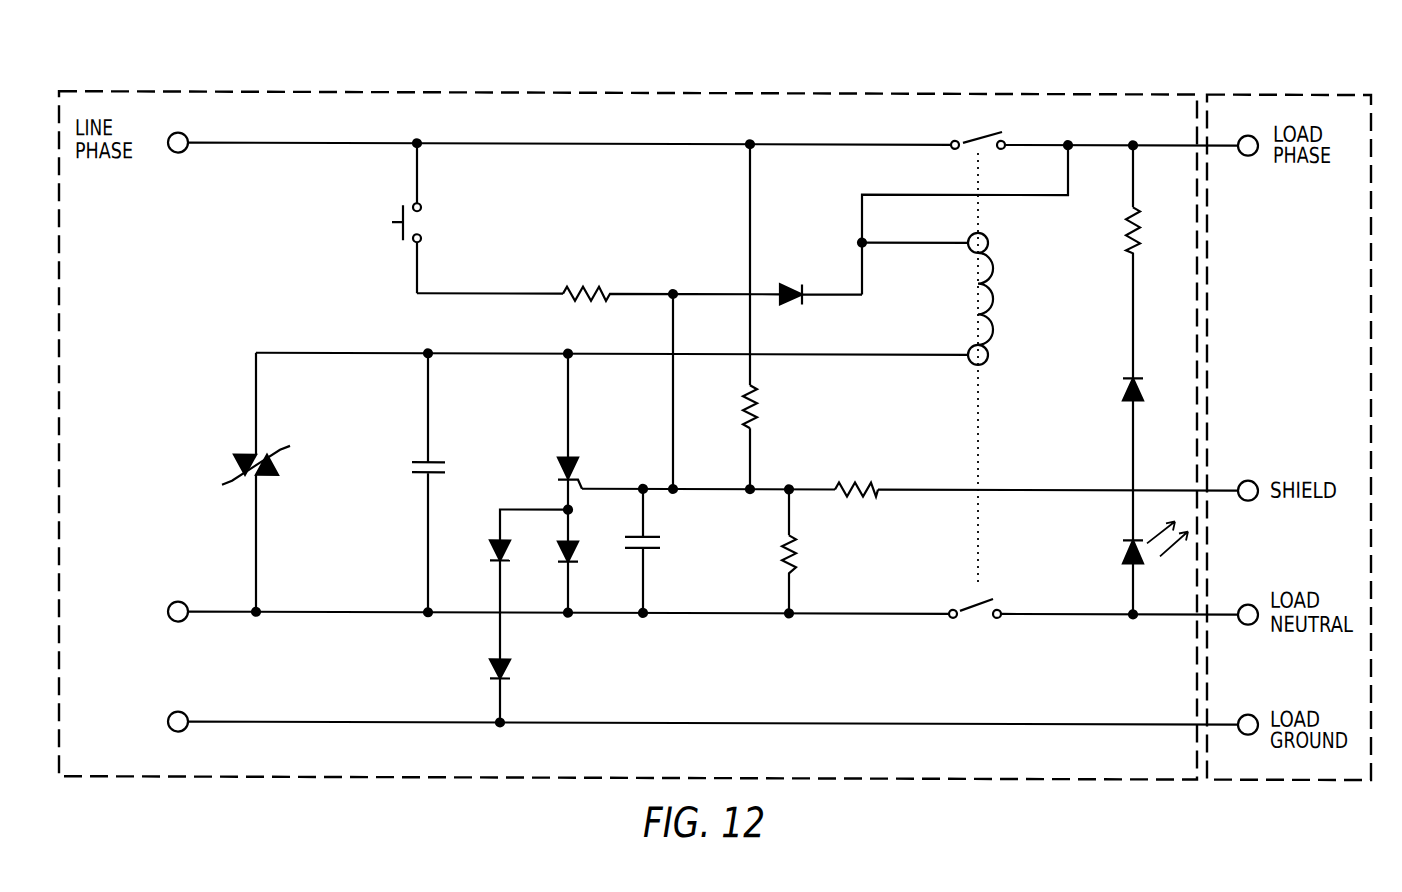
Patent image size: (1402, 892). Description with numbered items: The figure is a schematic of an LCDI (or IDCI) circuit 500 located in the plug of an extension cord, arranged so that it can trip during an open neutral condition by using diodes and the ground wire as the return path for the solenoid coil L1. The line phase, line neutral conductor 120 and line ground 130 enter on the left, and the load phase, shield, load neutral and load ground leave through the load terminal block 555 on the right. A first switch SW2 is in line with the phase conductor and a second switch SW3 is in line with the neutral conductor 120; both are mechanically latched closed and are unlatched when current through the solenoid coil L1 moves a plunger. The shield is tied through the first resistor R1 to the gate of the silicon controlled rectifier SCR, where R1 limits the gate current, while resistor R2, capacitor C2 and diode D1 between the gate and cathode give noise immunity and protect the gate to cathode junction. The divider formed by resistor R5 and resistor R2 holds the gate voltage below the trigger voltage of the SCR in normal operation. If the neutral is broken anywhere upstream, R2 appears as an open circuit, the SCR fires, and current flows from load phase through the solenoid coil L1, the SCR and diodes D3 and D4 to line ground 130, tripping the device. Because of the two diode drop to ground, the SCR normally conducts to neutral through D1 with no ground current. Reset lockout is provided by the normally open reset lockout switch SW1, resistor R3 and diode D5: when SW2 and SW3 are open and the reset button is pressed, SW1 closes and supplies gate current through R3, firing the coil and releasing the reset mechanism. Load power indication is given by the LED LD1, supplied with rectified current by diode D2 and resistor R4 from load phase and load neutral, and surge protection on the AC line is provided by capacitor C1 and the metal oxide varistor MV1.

The LCDI circuit 500 is at (912, 88).
The load terminal block 555 is at (1288, 88).
The neutral conductor 120 is at (231, 611).
The line ground 130 is at (236, 721).
The reset lockout switch SW1 is at (422, 216).
The first switch SW2 is at (977, 119).
The second switch SW3 is at (962, 617).
The first resistor R1 is at (874, 483).
The resistor R2 is at (803, 551).
The resistor R3 is at (599, 281).
The resistor R4 is at (1128, 237).
The resistor R5 is at (762, 420).
The capacitor C1 is at (408, 468).
The capacitor C2 is at (660, 543).
The diode D1 is at (580, 549).
The diode D2 is at (1145, 390).
The diode D3 is at (495, 551).
The diode D4 is at (490, 666).
The diode D5 is at (802, 281).
The solenoid coil L1 is at (976, 276).
The metal oxide varistor MV1 is at (279, 482).
The silicon controlled rectifier SCR is at (575, 466).
The LED LD1 is at (1124, 546).